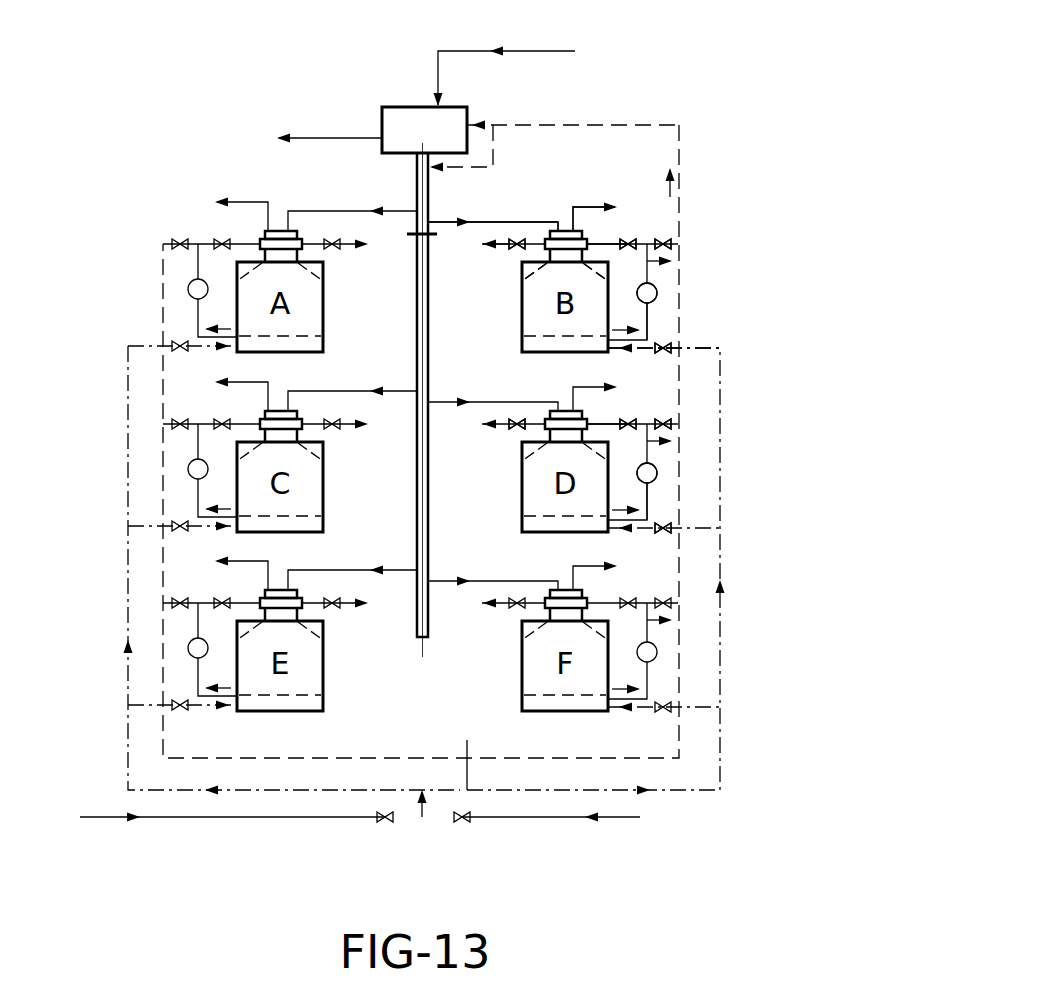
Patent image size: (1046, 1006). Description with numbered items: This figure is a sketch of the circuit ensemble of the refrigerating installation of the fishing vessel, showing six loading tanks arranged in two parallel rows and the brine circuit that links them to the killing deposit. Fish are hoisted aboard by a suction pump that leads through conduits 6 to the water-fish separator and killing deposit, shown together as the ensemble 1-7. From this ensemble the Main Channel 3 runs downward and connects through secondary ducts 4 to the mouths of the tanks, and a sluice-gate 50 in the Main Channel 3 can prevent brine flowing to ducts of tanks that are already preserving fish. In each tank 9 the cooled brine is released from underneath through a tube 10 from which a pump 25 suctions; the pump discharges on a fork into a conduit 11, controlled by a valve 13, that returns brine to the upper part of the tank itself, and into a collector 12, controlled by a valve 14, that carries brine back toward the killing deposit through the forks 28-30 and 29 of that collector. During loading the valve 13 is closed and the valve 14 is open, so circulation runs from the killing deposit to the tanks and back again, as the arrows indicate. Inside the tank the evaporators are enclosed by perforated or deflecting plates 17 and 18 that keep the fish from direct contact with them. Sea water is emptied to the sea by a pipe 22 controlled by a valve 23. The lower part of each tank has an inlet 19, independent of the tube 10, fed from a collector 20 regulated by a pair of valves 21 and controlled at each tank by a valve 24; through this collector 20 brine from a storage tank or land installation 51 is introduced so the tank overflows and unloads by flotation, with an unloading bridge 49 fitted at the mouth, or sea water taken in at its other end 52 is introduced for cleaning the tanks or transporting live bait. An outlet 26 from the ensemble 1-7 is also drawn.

The conduit 6 is at (463, 51).
The water-fish separator and killing tank ensemble 1-7 is at (385, 118).
The fork of the collector 28-30 is at (535, 125).
The collector conduit 12 is at (680, 168).
The fork of the collector 29 is at (494, 150).
The outlet line 26 is at (330, 138).
The Main Channel 3 is at (430, 204).
The secondary duct 4 is at (490, 222).
The unloading bridge 49 is at (578, 205).
The return conduit 11 is at (596, 245).
The valve 13 is at (630, 245).
The valve 14 is at (667, 245).
The pump 25 is at (660, 290).
The tube 10 is at (650, 322).
The valve 24 is at (664, 346).
The sluice-gate 50 is at (413, 238).
The pipe 22 is at (490, 246).
The valve 23 is at (513, 248).
The perforated plate 18 is at (553, 293).
The perforated plate 17 is at (544, 346).
The inlet 19 is at (640, 349).
The tank 9 is at (325, 320).
The collector 20 is at (127, 472).
The valve 21 is at (452, 818).
The storage tank or land installation 51 is at (575, 818).
The collector end 52 is at (120, 818).